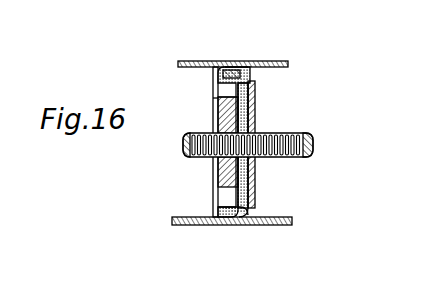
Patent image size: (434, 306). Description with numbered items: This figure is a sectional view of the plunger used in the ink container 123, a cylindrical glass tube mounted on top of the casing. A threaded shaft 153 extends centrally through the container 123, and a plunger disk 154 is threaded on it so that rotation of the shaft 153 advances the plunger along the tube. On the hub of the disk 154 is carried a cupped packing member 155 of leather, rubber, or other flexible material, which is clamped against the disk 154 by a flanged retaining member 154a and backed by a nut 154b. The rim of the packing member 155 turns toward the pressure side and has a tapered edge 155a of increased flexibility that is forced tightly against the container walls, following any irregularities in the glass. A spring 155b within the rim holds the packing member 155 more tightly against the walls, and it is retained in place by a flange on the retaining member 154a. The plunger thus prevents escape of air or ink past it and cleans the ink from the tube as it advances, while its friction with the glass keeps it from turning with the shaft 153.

The ink container 123 is at (285, 62).
The shaft 153 is at (293, 133).
The plunger disk 154 is at (255, 101).
The flanged retaining member 154a is at (227, 95).
The nut 154b is at (216, 100).
The cupped packing member 155 is at (250, 74).
The tapered edge 155a is at (220, 71).
The spring 155b is at (236, 66).